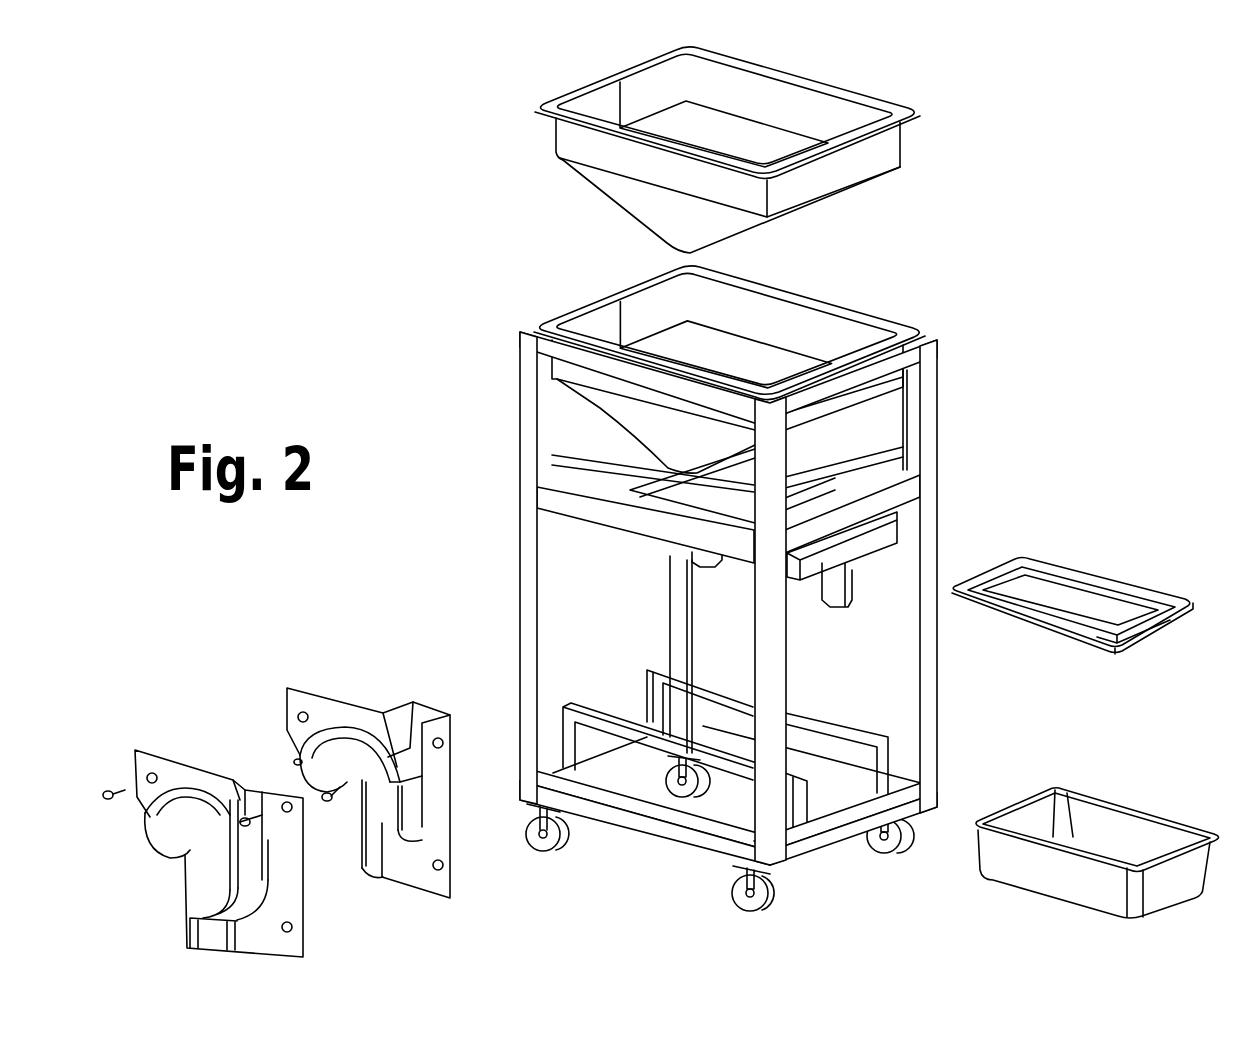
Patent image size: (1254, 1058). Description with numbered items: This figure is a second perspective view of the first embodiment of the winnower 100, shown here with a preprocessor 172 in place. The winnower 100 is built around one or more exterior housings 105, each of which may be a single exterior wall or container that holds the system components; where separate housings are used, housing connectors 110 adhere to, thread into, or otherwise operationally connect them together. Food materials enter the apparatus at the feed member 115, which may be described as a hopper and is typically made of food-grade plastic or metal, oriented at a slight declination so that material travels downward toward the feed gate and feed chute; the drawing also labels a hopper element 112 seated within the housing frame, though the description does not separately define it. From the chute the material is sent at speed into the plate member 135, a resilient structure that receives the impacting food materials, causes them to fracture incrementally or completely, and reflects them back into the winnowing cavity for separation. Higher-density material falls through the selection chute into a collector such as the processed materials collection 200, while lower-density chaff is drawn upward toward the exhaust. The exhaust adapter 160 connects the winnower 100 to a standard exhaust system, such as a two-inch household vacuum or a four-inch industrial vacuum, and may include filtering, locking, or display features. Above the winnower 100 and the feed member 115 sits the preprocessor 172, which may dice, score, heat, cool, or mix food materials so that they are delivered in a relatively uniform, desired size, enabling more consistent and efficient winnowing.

The winnower 100 is at (358, 308).
The exterior housing 105 is at (940, 657).
The housing connector 110 is at (180, 857).
The hopper 112 is at (744, 366).
The feed member 115 is at (1118, 583).
The plate member 135 is at (380, 820).
The exhaust adapter 160 is at (296, 761).
The preprocessor 172 is at (908, 91).
The processed materials collection 200 is at (1055, 883).